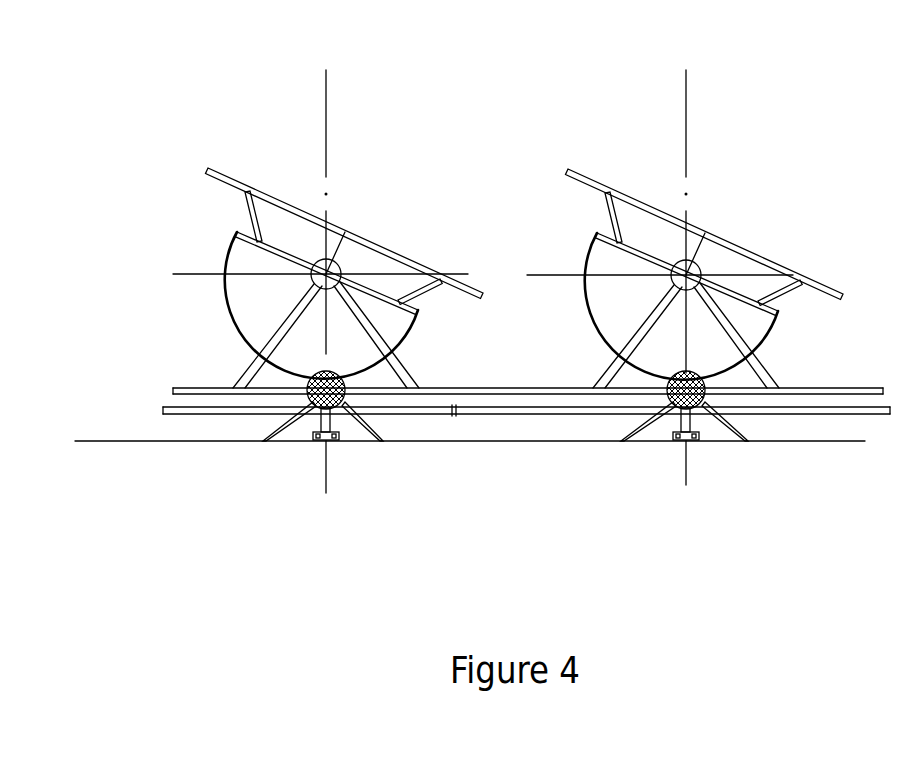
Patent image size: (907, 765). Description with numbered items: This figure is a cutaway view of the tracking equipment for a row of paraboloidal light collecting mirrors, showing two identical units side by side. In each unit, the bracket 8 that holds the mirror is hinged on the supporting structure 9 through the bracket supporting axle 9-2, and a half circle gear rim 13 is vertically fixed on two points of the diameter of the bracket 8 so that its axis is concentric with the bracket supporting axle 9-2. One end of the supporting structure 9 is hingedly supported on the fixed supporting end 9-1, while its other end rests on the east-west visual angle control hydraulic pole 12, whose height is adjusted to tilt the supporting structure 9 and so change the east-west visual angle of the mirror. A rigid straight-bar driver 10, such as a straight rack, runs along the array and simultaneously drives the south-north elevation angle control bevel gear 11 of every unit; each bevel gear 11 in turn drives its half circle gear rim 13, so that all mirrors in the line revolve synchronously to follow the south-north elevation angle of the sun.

The bracket 8 is at (293, 209).
The supporting structure 9 is at (326, 403).
The fixed supporting end 9-1 is at (671, 454).
The bracket supporting axle 9-2 is at (260, 279).
The rigid straight-bar driver 10 is at (526, 455).
The south-north elevation angle control bevel gear 11 is at (714, 438).
The east-west visual angle control hydraulic pole 12 is at (292, 463).
The half circle gear rim 13 is at (257, 377).